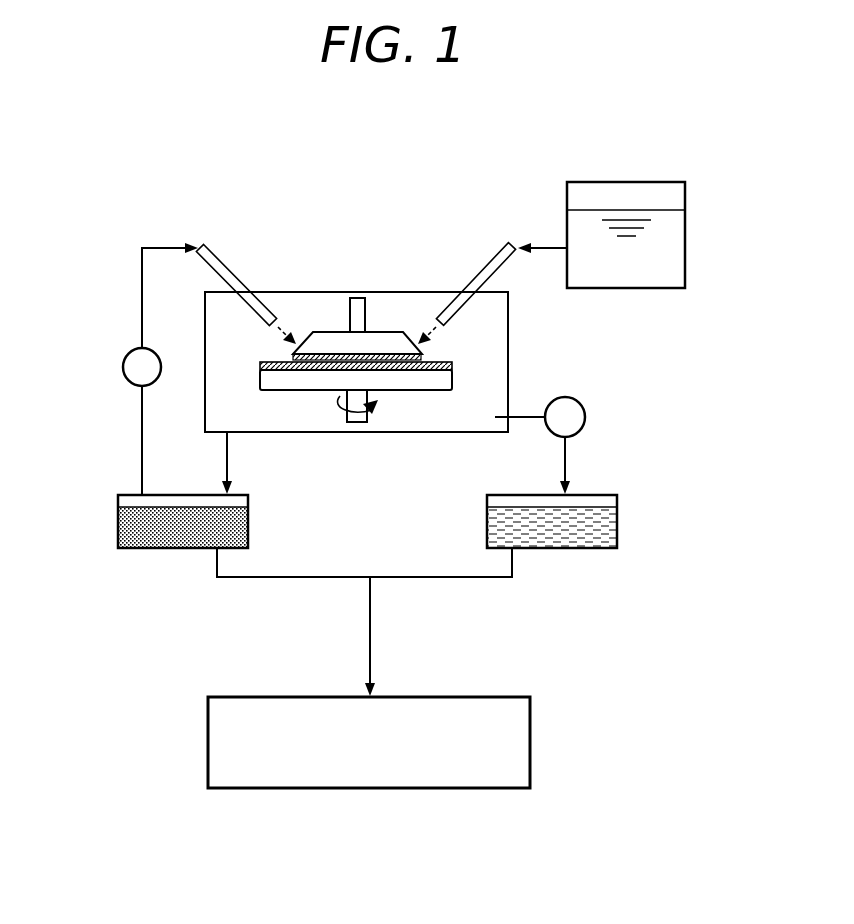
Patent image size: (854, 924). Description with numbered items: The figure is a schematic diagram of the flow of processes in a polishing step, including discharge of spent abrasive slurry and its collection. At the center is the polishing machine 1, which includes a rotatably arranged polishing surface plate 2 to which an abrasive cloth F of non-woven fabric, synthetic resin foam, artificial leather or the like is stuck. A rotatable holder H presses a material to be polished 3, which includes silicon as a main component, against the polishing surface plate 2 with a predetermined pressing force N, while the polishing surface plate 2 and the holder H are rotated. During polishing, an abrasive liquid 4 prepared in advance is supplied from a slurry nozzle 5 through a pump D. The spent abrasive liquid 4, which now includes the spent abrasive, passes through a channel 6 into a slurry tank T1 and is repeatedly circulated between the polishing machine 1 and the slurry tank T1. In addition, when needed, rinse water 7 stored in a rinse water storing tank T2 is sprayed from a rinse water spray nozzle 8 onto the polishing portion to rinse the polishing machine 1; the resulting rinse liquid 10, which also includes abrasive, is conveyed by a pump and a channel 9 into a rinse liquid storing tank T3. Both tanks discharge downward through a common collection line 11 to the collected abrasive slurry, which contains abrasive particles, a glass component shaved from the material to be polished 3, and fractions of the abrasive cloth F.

The polishing machine 1 is at (472, 122).
The polishing surface plate 2 is at (440, 380).
The material to be polished 3 is at (423, 362).
The abrasive liquid 4 is at (135, 515).
The slurry nozzle 5 is at (232, 268).
The channel 6 is at (228, 460).
The rinse water 7 is at (668, 258).
The rinse water spray nozzle 8 is at (487, 262).
The channel 9 is at (565, 455).
The rinse liquid 10 is at (600, 525).
The collection pipe 11 is at (370, 617).
The pump D is at (124, 356).
The abrasive cloth F is at (267, 365).
The holder H is at (380, 340).
The pressing force N is at (357, 302).
The slurry tank T1 is at (118, 540).
The rinse water storing tank T2 is at (685, 276).
The rinse liquid storing tank T3 is at (617, 540).